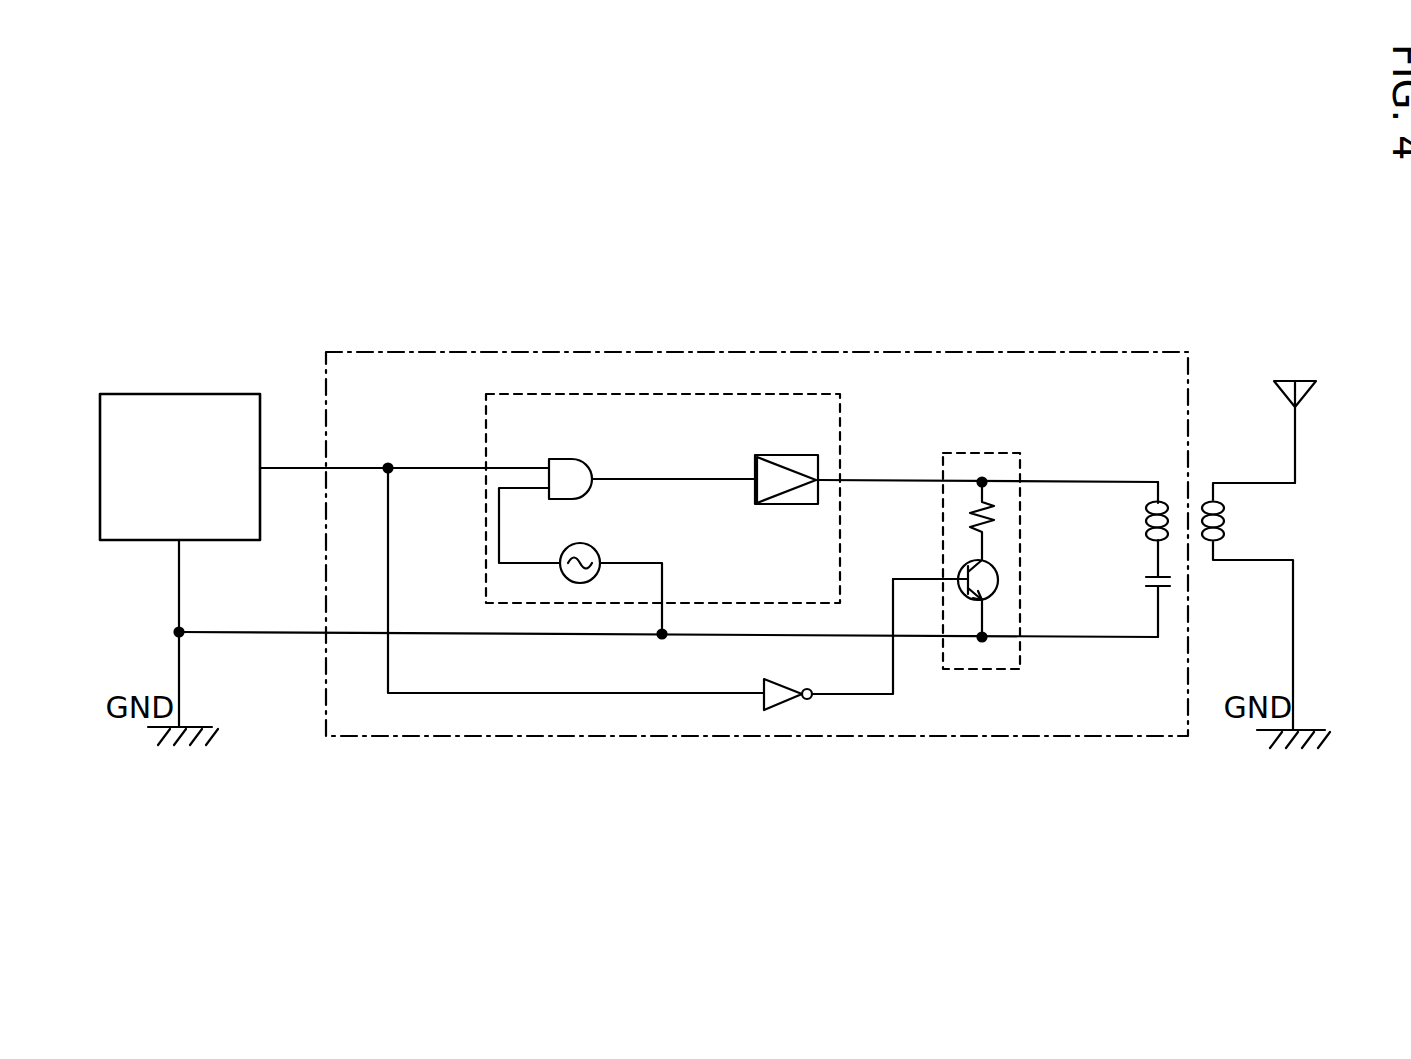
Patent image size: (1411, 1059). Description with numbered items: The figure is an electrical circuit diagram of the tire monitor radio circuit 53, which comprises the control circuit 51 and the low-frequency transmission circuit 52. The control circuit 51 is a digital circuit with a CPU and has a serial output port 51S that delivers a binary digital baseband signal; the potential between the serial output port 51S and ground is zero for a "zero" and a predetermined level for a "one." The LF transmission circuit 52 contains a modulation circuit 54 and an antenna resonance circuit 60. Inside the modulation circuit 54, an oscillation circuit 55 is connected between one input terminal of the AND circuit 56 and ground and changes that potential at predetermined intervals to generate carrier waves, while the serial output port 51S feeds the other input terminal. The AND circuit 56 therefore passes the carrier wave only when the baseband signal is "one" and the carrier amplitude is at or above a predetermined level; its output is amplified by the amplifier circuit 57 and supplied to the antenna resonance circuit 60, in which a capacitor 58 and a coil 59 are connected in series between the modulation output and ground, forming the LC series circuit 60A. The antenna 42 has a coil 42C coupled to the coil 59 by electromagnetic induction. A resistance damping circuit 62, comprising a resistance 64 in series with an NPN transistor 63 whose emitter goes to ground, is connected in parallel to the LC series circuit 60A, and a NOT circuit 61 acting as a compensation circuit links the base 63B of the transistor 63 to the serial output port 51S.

The antenna 42 is at (1281, 381).
The coil 42C is at (1226, 521).
The control circuit 51 is at (225, 394).
The serial output port 51S is at (262, 470).
The low-frequency transmission circuit 52 is at (373, 350).
The tire monitor radio circuit 53 is at (227, 253).
The modulation circuit 54 is at (508, 393).
The oscillation circuit 55 is at (585, 544).
The AND circuit 56 is at (558, 459).
The amplifier circuit 57 is at (782, 455).
The capacitor 58 is at (1142, 581).
The coil 59 is at (1145, 522).
The antenna resonance circuit 60 is at (1140, 478).
The inductance-capacitance series circuit 60A is at (1055, 253).
The NOT circuit 61 is at (783, 710).
The resistance damping circuit 62 is at (975, 672).
The transistor 63 is at (993, 596).
The base 63B is at (936, 582).
The resistance 64 is at (997, 512).